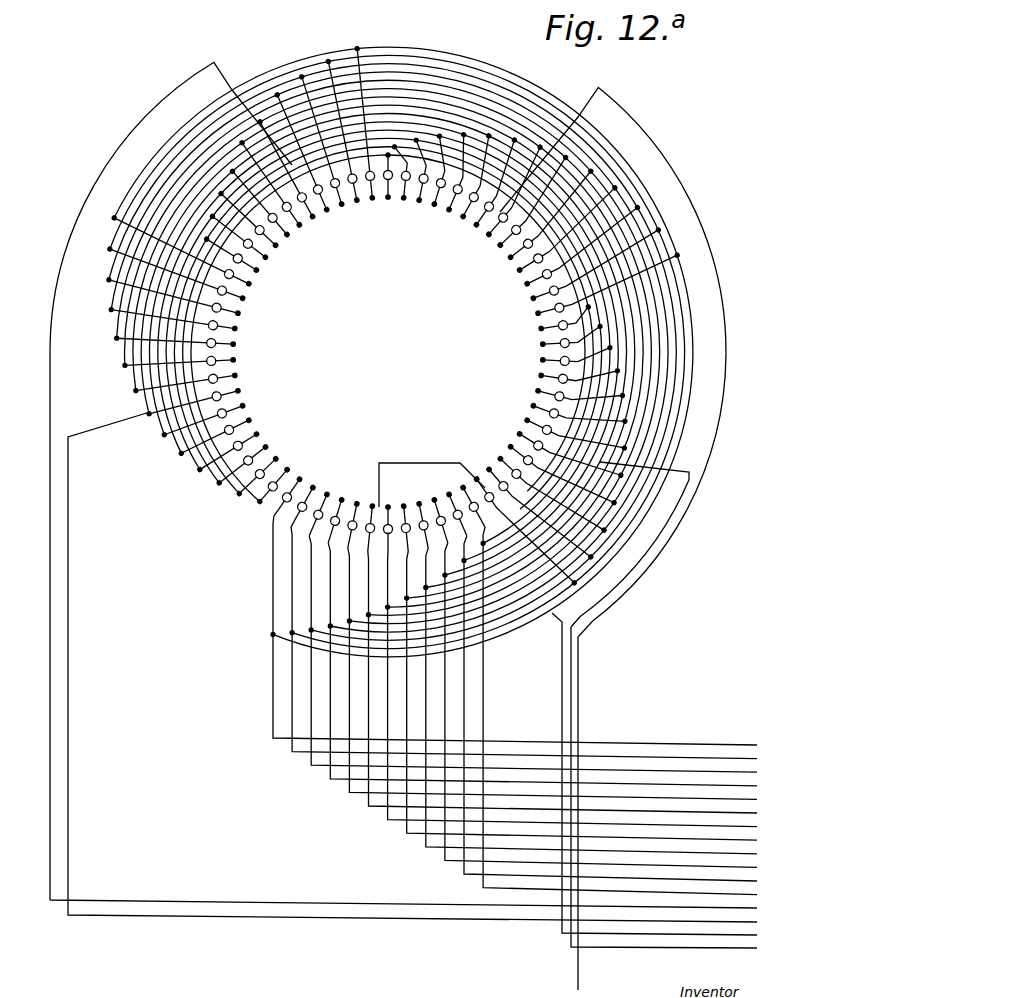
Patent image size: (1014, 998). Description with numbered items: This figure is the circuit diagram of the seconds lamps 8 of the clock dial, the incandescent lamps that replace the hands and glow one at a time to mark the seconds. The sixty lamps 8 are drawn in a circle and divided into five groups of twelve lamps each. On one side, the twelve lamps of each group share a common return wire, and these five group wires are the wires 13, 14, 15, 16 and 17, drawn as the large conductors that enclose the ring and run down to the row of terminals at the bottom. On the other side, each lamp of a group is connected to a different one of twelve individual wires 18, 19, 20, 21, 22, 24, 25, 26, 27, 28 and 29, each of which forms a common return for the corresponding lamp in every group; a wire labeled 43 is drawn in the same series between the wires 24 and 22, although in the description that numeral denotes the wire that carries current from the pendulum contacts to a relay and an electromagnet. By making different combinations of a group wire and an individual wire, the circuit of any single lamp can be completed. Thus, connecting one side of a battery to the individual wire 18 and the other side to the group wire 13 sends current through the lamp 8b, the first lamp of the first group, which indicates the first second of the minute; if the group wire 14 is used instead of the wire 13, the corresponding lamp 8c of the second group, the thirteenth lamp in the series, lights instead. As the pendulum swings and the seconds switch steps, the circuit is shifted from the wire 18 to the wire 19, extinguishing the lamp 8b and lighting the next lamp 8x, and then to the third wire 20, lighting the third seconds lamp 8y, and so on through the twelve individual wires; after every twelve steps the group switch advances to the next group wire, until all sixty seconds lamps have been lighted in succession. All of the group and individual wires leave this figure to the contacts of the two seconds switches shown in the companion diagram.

The seconds lamps 8 is at (270, 250).
The first seconds lamp 8b is at (402, 199).
The second seconds lamp 8x is at (419, 204).
The third seconds lamp 8y is at (435, 207).
The first lamp of the second group 8c is at (540, 320).
The group common return wire 13 is at (578, 647).
The group common return wire 14 is at (571, 680).
The group common return wire 15 is at (560, 676).
The group common return wire 16 is at (68, 612).
The group common return wire 17 is at (50, 668).
The individual wire 18 is at (483, 889).
The individual wire 19 is at (463, 878).
The individual wire 20 is at (445, 863).
The individual wire 21 is at (425, 850).
The individual wire 22 is at (406, 836).
The wire 43 is at (387, 821).
The individual wire 24 is at (368, 808).
The individual wire 25 is at (348, 794).
The individual wire 26 is at (327, 781).
The individual wire 27 is at (310, 766).
The individual wire 28 is at (291, 753).
The individual wire 29 is at (272, 741).